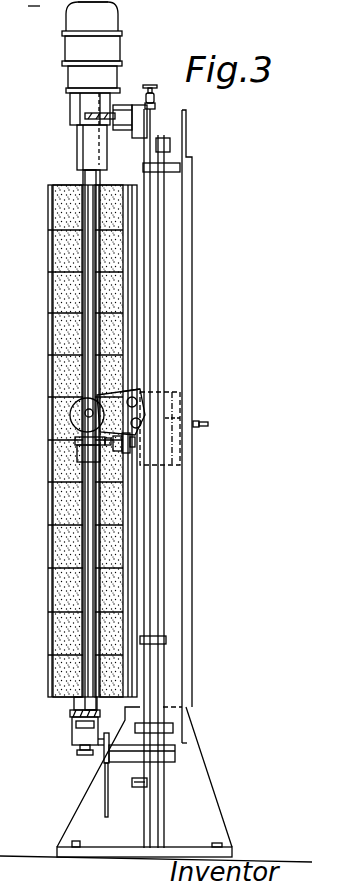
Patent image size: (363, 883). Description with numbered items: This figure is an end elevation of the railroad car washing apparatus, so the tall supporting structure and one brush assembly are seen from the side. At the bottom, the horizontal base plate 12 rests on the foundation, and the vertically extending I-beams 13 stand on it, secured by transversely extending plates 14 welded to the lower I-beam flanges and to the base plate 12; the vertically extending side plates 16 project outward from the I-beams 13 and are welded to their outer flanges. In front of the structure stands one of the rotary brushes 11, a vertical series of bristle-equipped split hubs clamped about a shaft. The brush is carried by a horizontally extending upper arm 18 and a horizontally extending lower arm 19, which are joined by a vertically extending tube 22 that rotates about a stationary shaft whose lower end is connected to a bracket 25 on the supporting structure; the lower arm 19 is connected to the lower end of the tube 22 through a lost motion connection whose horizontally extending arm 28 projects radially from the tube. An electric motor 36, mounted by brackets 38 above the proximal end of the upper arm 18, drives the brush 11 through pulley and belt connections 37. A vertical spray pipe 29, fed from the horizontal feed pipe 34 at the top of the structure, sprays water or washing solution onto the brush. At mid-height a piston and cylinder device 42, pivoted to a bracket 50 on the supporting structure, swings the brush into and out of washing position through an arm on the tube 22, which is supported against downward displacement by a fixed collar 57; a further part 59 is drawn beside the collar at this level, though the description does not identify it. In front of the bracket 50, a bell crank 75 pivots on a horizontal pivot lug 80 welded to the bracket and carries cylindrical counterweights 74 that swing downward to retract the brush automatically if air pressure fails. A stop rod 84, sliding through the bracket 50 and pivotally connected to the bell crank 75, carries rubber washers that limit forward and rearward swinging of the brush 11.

The pulley and belt connections 37 is at (22, 7).
The electric motors 36 is at (120, 48).
The brackets 38 is at (70, 105).
The spray pipes 29 is at (113, 112).
The feed pipe 34 is at (152, 116).
The upper arms 18 is at (77, 144).
The I-beams 13 is at (178, 147).
The side plates 16 is at (192, 313).
The tubes 22 is at (85, 258).
The rotary brushes 11 is at (50, 221).
The counterweights 74 is at (77, 413).
The bell cranks 75 is at (121, 412).
The pivot lugs 80 is at (132, 396).
The brackets 50 is at (180, 452).
The stop rods 84 is at (205, 429).
The cross bar 59 is at (75, 440).
The fixed collars 57 is at (80, 453).
The piston and cylinder devices 42 is at (138, 452).
The arms 28 is at (72, 713).
The lower arms 19 is at (72, 731).
The brackets 25 is at (80, 756).
The transversely extending plates 14 is at (195, 768).
The base plate 12 is at (88, 850).